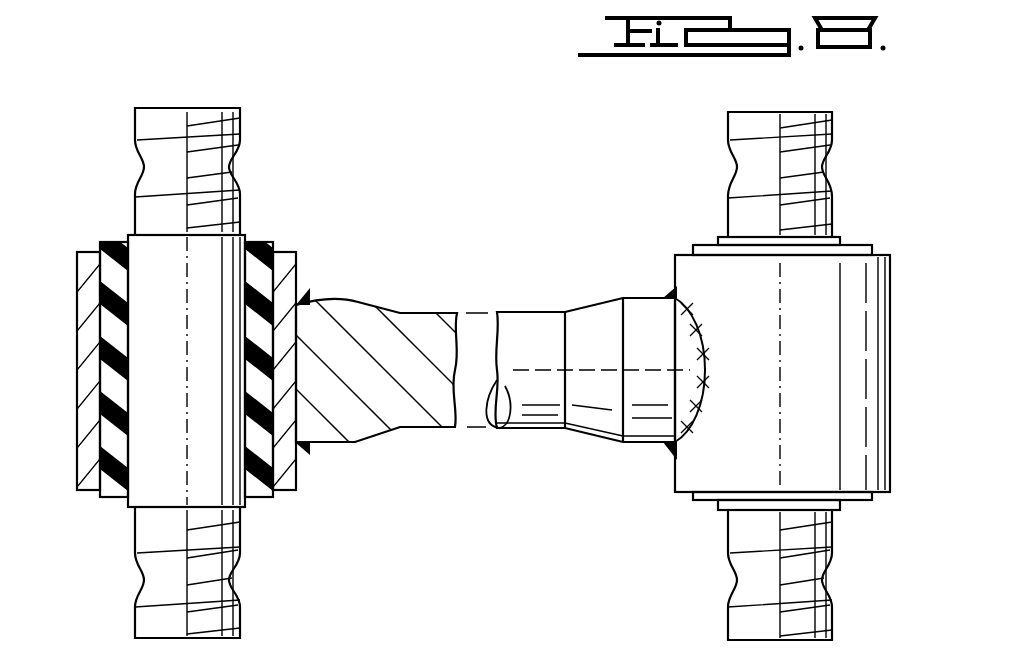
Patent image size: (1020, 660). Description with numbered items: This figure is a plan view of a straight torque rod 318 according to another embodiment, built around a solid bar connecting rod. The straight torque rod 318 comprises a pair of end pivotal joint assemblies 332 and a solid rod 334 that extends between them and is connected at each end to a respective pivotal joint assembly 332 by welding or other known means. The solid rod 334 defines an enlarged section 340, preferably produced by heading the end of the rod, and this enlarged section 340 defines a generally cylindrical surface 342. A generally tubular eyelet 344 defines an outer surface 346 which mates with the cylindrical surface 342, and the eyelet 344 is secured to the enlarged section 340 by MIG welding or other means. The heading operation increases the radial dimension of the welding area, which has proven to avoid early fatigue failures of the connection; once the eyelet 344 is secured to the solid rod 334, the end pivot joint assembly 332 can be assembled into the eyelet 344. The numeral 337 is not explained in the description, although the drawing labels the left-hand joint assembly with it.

The straight torque rod 318 is at (516, 188).
The end pivotal joint assembly 332 is at (868, 210).
The solid rod 334 is at (428, 430).
The sleeve assembly 337 is at (77, 224).
The enlarged section 340 is at (332, 444).
The cylindrical surface 342 is at (290, 311).
The tubular eyelet 344 is at (88, 466).
The outer surface 346 is at (297, 257).